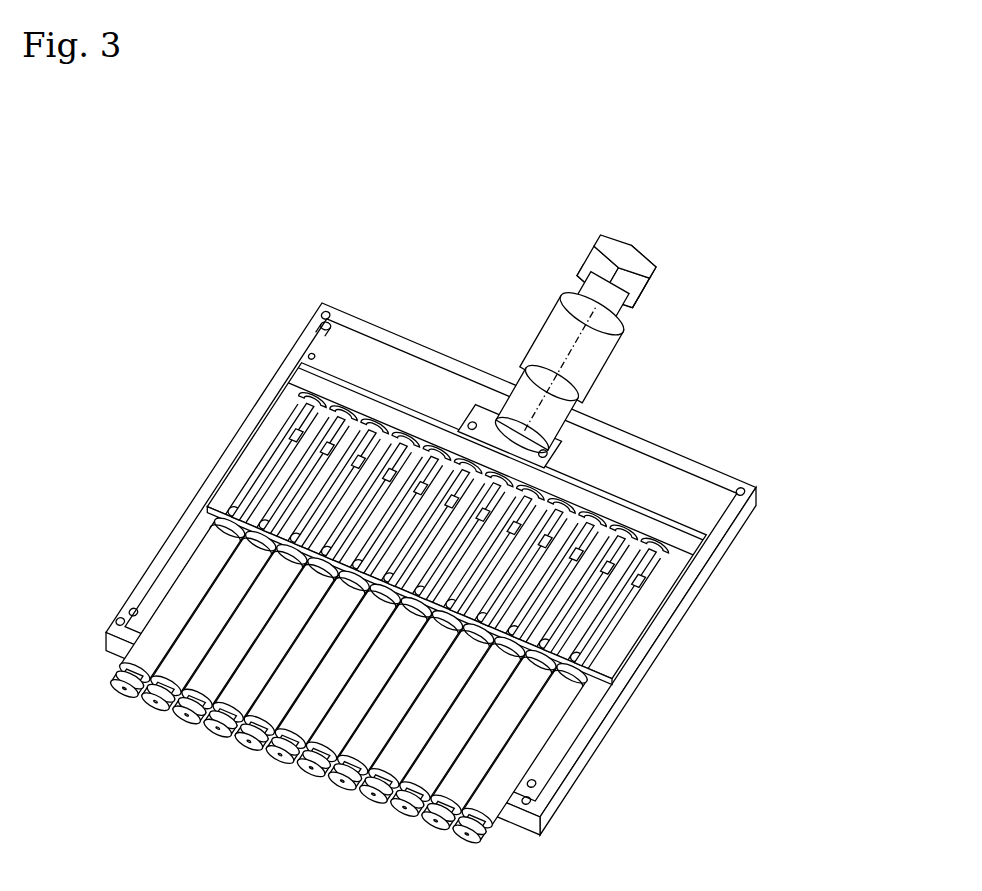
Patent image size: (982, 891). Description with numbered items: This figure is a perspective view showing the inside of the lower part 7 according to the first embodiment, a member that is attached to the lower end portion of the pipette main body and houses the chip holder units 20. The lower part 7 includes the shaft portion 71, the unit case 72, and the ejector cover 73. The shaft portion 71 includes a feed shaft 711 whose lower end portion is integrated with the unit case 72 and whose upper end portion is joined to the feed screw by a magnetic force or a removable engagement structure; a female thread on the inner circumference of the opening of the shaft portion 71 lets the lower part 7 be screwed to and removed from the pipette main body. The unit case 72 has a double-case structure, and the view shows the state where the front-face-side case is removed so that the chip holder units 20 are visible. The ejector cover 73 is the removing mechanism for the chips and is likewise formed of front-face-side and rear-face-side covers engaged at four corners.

The lower part 7 is at (203, 263).
The chip holder unit 20 is at (546, 730).
The shaft portion 71 is at (537, 323).
The feed shaft 711 is at (596, 343).
The unit case 72 is at (393, 395).
The ejector cover 73 is at (725, 475).